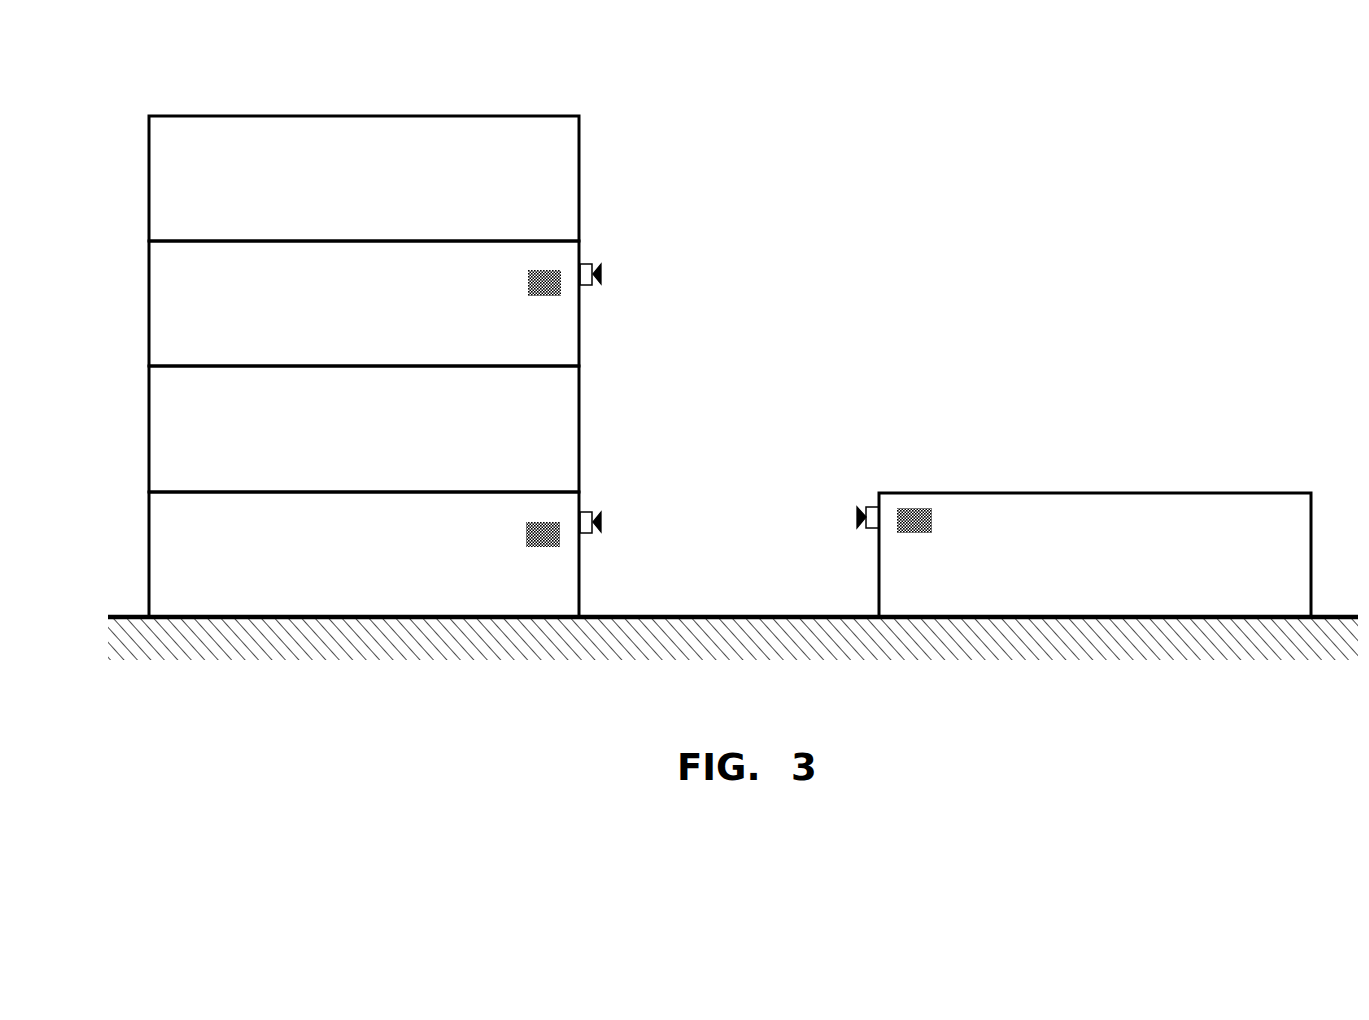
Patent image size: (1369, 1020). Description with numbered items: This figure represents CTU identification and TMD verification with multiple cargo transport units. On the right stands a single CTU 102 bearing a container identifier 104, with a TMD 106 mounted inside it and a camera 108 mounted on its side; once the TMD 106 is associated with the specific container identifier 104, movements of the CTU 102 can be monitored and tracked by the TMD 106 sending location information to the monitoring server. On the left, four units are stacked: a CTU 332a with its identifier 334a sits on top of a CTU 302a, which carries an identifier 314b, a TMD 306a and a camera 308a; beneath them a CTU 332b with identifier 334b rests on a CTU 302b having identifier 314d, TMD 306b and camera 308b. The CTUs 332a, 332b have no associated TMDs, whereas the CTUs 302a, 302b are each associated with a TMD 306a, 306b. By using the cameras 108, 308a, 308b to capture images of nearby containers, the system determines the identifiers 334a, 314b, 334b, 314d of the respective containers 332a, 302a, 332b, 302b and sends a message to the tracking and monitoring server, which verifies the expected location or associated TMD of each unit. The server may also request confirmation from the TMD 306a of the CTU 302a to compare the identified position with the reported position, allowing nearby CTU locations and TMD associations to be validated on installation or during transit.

The CTU 332a is at (148, 185).
The identifier 334a is at (574, 134).
The CTU 302a is at (148, 300).
The identifier 314b is at (572, 258).
The camera 308a is at (601, 276).
The TMD 306a is at (523, 290).
The CTU 332b is at (148, 435).
The identifier 334b is at (574, 386).
The CTU 302b is at (148, 552).
The identifier 314d is at (572, 510).
The camera 308b is at (601, 524).
The TMD 306b is at (523, 541).
The CTU 102 is at (1163, 493).
The container identifier 104 is at (1257, 503).
The TMD 106 is at (935, 515).
The camera 108 is at (857, 517).